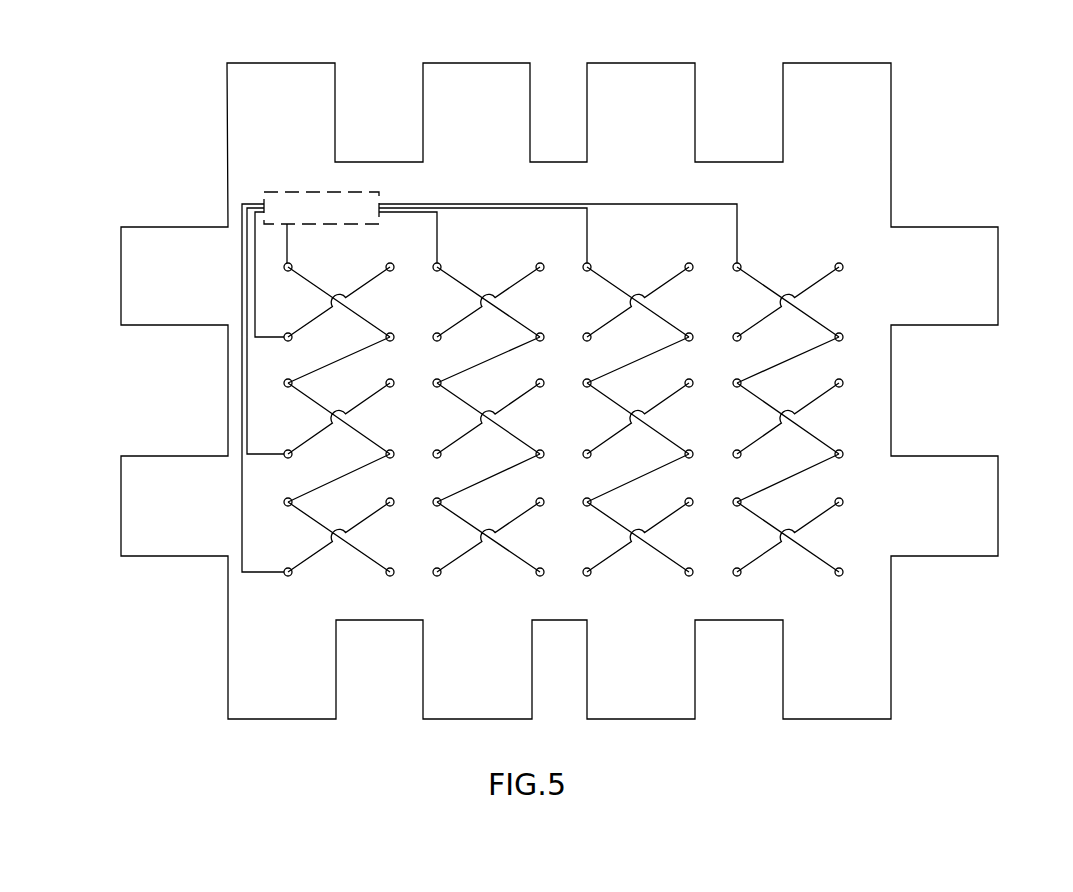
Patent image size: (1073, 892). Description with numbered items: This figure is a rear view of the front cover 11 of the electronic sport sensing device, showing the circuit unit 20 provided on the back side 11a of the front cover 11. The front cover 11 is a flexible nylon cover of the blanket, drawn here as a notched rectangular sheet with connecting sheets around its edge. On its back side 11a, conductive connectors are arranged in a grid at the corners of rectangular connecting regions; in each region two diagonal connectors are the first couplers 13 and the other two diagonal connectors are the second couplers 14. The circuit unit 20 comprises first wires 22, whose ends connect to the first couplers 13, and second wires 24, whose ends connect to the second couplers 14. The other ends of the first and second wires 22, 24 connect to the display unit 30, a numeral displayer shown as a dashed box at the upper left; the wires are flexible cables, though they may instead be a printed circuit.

The front cover 11 is at (892, 162).
The back side 11a is at (835, 247).
The first couplers 13 is at (392, 333).
The second couplers 14 is at (390, 263).
The circuit unit 20 is at (419, 291).
The first wires 22 is at (700, 204).
The second wires 24 is at (240, 385).
The display unit 30 is at (290, 193).